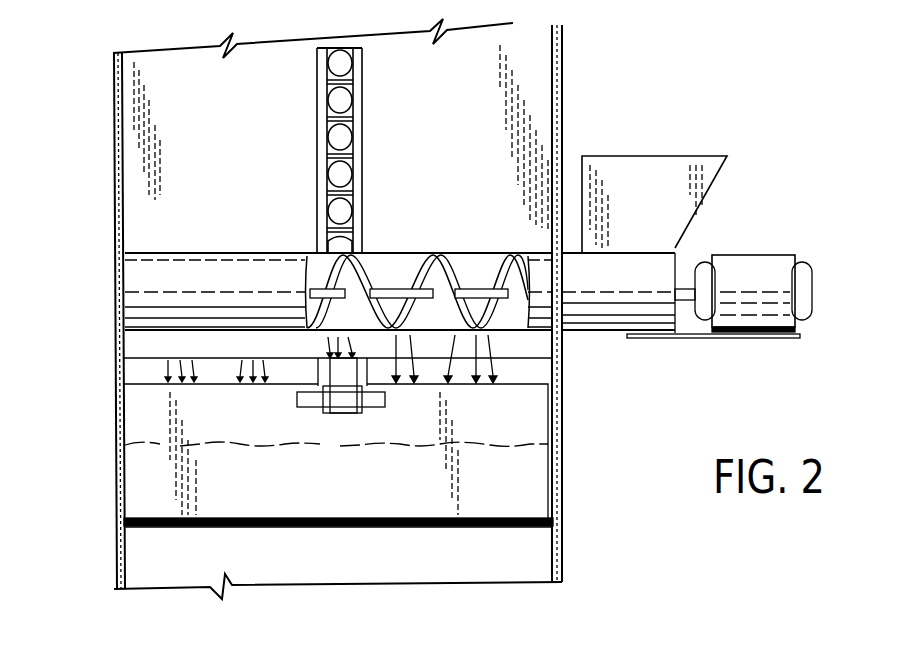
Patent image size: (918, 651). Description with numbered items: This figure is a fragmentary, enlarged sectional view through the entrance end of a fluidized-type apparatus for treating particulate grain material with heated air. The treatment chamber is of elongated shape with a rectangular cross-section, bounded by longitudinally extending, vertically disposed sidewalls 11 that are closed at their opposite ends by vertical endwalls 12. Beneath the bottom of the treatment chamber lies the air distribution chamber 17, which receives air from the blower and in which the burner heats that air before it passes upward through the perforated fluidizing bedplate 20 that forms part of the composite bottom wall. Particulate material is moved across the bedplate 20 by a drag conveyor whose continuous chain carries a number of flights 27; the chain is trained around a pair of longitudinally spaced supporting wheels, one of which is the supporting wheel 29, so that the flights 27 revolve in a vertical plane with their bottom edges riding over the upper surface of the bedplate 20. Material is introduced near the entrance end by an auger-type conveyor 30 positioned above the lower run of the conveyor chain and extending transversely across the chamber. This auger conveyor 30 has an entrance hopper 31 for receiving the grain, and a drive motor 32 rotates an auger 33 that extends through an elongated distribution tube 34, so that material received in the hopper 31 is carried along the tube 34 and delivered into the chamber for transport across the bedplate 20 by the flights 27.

The sidewalls 11 is at (114, 158).
The endwalls 12 is at (236, 170).
The air distribution chamber 17 is at (540, 568).
The bedplate 20 is at (163, 526).
The flights 27 is at (160, 410).
The supporting wheel 29 is at (365, 130).
The auger-type conveyor 30 is at (612, 332).
The entrance hopper 31 is at (645, 156).
The drive motor 32 is at (763, 255).
The auger 33 is at (430, 272).
The distribution tube 34 is at (201, 263).